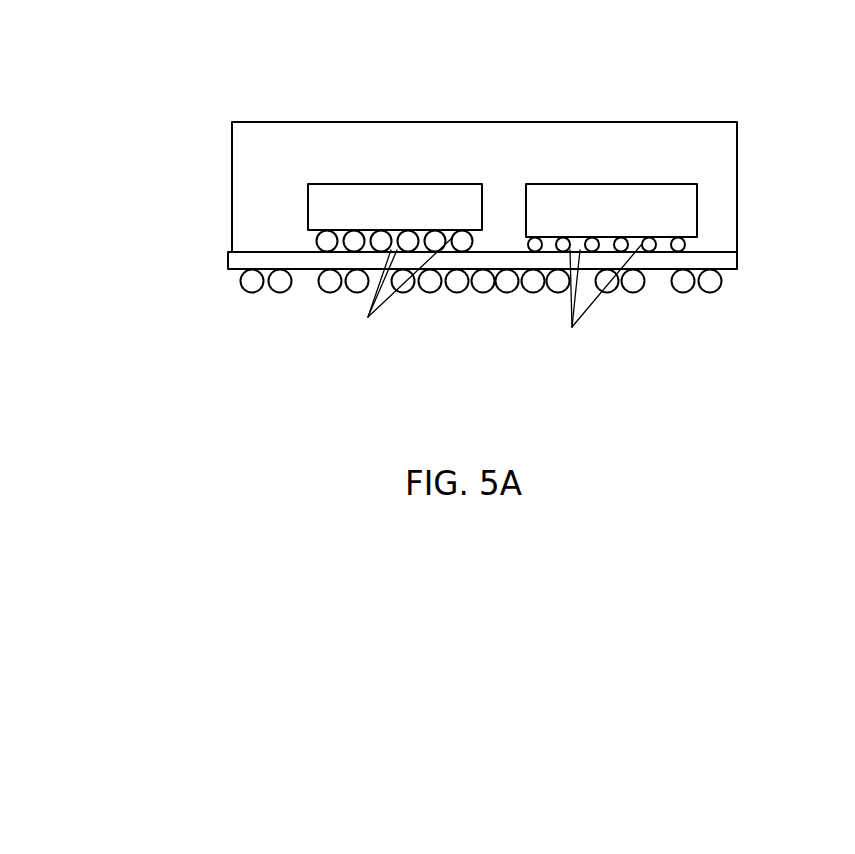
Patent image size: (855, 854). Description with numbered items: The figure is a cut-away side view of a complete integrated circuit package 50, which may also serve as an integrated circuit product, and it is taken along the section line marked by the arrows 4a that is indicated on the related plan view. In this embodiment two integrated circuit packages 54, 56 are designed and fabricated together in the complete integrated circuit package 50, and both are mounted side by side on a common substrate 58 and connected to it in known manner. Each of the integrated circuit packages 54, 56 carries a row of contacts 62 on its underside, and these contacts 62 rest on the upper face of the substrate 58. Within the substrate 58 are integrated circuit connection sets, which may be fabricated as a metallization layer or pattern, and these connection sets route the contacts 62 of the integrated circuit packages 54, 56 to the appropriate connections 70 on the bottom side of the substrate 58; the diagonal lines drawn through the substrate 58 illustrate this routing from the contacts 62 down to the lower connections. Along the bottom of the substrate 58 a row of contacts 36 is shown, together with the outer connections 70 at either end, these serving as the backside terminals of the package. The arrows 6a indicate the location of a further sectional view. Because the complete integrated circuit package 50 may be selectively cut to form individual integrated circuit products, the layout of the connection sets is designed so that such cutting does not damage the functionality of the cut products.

The complete integrated circuit package 50 is at (484, 142).
The integrated circuit package 54 is at (618, 184).
The integrated circuit package 56 is at (402, 184).
The substrate 58 is at (307, 266).
The contacts 62 is at (498, 296).
The contacts 36 is at (533, 292).
The connections 70 is at (273, 291).
The section view indicator 4a is at (486, 275).
The section view indicator 6a is at (484, 304).